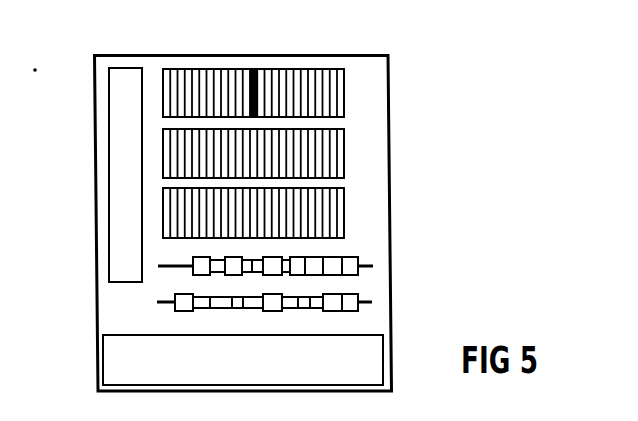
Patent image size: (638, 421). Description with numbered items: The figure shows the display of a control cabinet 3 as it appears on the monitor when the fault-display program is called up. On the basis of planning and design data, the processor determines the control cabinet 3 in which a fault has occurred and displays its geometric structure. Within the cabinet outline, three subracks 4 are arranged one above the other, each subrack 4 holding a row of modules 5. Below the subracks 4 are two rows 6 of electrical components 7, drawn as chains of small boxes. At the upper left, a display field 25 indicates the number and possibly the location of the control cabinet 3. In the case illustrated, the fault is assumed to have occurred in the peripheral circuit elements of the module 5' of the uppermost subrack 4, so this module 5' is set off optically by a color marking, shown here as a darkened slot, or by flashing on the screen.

The control cabinet 3 is at (392, 93).
The subrack 4 is at (344, 93).
The module 5 is at (253, 63).
The module 5' is at (250, 63).
The row 6 is at (172, 267).
The electrical component 7 is at (283, 263).
The display field 25 is at (41, 51).